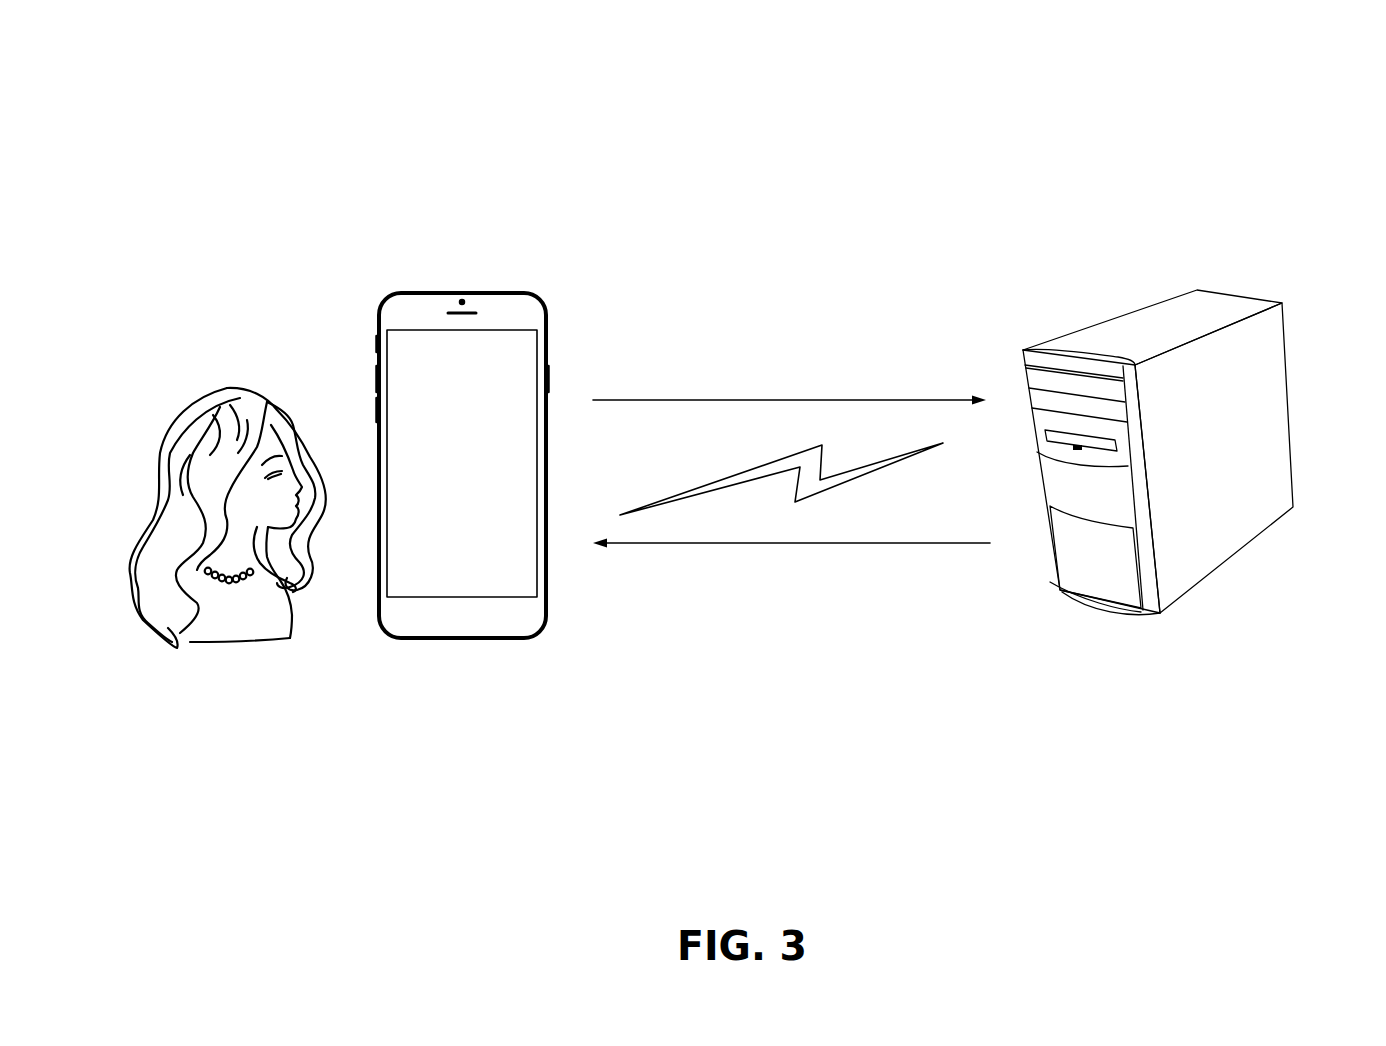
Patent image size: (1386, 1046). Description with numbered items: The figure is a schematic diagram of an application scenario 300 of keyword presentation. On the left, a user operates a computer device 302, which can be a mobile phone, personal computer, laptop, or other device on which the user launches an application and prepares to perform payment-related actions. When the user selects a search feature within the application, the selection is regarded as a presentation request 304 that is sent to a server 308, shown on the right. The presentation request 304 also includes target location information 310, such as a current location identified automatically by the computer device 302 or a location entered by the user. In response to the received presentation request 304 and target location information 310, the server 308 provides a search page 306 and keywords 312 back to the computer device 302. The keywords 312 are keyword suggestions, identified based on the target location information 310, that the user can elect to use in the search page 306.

The application scenario 300 is at (1308, 135).
The computer device 302 is at (484, 745).
The presentation request 304 is at (948, 302).
The search page 306 is at (884, 598).
The server 308 is at (1178, 745).
The target location information 310 is at (948, 369).
The keywords 312 is at (884, 666).